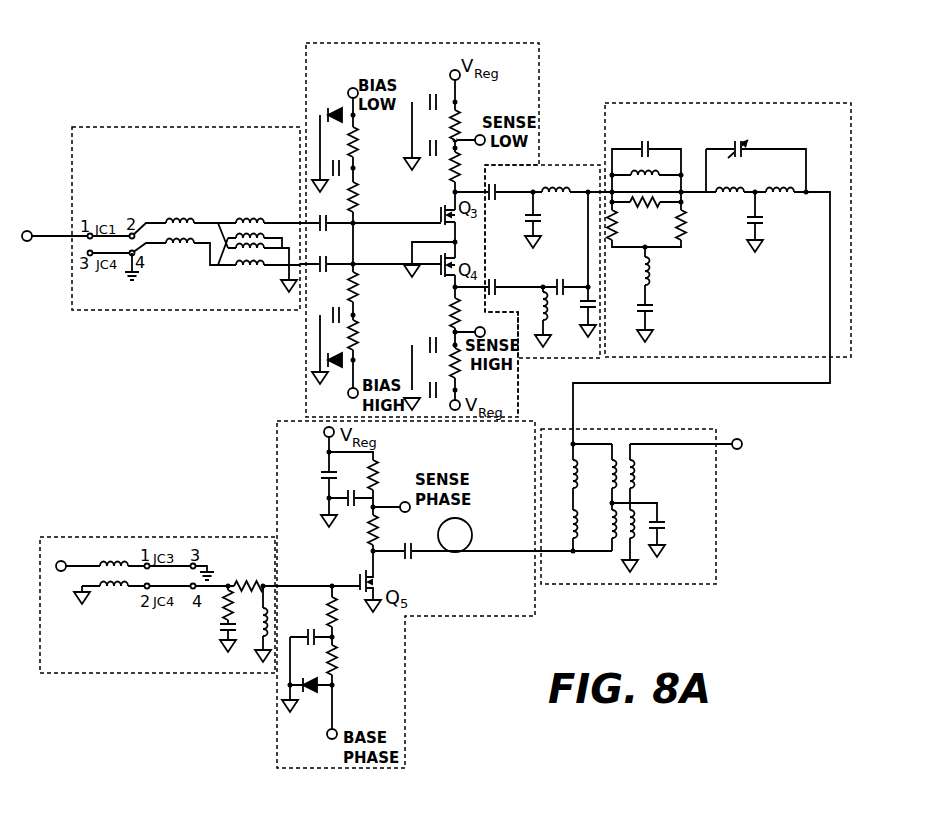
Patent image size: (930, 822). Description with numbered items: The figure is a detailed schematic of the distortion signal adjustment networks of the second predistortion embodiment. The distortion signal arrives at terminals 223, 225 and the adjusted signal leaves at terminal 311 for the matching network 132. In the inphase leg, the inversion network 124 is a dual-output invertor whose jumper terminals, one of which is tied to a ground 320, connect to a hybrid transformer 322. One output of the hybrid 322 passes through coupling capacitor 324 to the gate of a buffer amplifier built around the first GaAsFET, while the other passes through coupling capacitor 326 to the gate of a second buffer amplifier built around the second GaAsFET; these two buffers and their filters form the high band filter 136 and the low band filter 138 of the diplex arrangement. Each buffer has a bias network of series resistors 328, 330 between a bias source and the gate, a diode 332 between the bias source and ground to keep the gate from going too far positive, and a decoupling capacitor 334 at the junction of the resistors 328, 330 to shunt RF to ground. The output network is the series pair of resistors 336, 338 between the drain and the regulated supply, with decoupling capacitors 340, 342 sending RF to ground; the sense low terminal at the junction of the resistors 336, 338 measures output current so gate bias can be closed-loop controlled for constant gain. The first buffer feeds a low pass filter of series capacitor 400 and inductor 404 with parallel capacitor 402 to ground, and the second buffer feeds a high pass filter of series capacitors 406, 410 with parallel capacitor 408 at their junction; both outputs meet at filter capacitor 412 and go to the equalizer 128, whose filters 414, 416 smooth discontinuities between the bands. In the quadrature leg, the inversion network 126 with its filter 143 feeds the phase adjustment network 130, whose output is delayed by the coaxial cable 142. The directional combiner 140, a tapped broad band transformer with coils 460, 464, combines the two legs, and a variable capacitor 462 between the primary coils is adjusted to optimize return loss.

The inversion network 124 is at (193, 126).
The terminal 223 is at (28, 231).
The ground connection 320 is at (140, 280).
The hybrid transformer 322 is at (250, 218).
The high band filter 136 is at (393, 42).
The diode 332 is at (333, 108).
The resistor 328 is at (358, 142).
The decoupling capacitor 334 is at (338, 175).
The resistor 330 is at (358, 195).
The coupling capacitor 324 is at (330, 229).
The coupling capacitor 326 is at (330, 269).
The decoupling capacitor 340 is at (428, 98).
The decoupling capacitor 342 is at (433, 155).
The resistor 336 is at (462, 118).
The resistor 338 is at (471, 164).
The low band filter 138 is at (519, 384).
The capacitor 400 is at (490, 187).
The parallel capacitor 402 is at (540, 213).
The inductor 404 is at (547, 187).
The capacitor 406 is at (511, 271).
The parallel capacitor 408 is at (541, 306).
The capacitor 410 is at (563, 281).
The filter capacitor 412 is at (580, 308).
The amplitude adjustment network 128 is at (760, 102).
The filter 414 is at (659, 250).
The filter 416 is at (735, 202).
The directional combiner 140 is at (716, 498).
The terminal 311 is at (736, 439).
The matching network 132 is at (799, 454).
The transformer 460 is at (608, 481).
The inductor 464 is at (636, 471).
The variable capacitor 462 is at (663, 531).
The phase adjustment network 130 is at (405, 692).
The delay network 142 is at (472, 535).
The inversion network 126 is at (100, 537).
The terminal 225 is at (61, 572).
The filter 143 is at (256, 632).